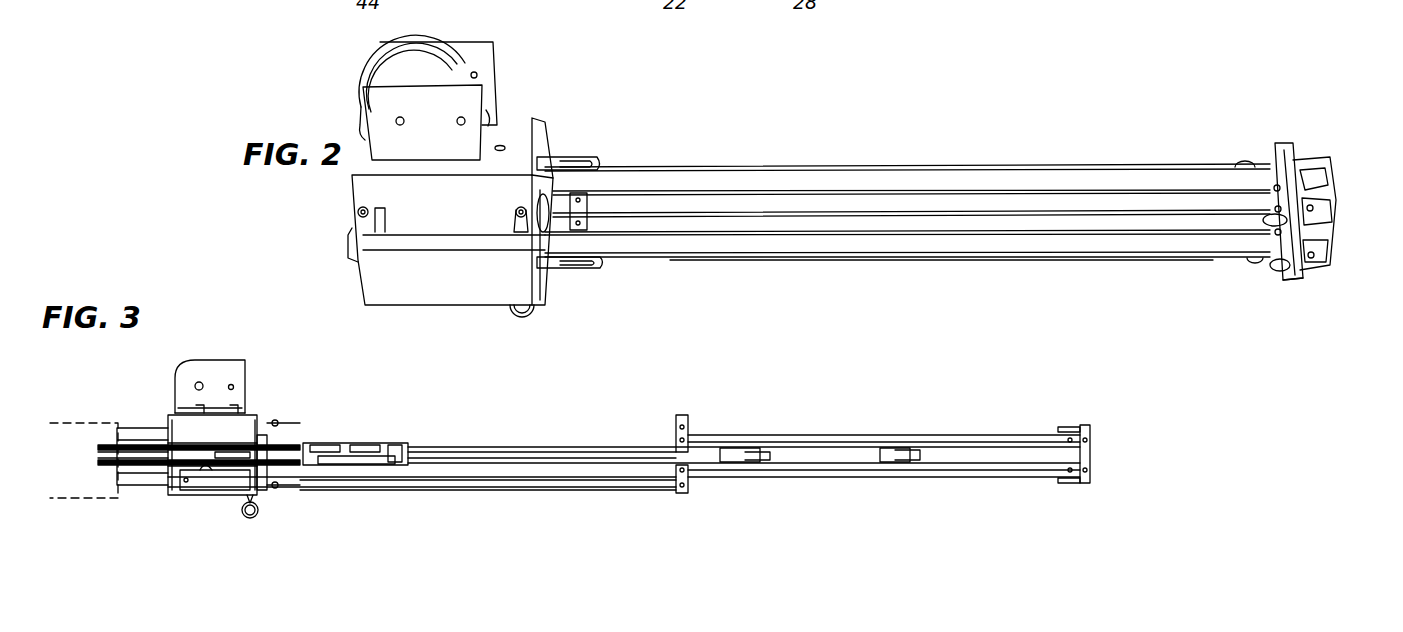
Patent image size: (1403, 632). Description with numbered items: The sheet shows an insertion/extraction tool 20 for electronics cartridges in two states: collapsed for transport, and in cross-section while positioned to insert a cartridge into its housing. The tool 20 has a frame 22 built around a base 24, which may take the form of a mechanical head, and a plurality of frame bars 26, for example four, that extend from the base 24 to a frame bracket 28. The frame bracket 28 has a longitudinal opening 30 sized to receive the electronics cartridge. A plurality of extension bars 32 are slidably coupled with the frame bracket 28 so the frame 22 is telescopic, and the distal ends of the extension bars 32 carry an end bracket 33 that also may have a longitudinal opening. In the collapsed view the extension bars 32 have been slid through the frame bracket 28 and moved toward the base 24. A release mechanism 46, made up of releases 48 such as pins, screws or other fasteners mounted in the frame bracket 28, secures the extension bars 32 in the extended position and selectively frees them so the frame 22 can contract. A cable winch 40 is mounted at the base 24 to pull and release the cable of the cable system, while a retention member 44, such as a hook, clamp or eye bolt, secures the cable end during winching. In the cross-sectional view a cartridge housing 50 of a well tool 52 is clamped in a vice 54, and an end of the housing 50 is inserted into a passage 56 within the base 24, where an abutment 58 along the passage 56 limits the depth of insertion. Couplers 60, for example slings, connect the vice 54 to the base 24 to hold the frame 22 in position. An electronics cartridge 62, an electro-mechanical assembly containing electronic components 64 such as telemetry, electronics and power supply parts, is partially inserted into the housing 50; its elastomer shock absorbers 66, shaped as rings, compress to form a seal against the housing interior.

In FIG. 2, the tool 20 is at (1128, 148).
In FIG. 3, the tool 20 is at (827, 413).
In FIG. 2, the frame 22 is at (658, 283).
In FIG. 3, the frame 22 is at (662, 495).
In FIG. 2, the base 24 is at (357, 297).
In FIG. 3, the base 24 is at (220, 497).
In FIG. 2, the frame bars 26 is at (858, 243).
In FIG. 3, the frame bars 26 is at (533, 488).
In FIG. 2, the frame bracket 28 is at (1283, 150).
In FIG. 3, the frame bracket 28 is at (683, 495).
In FIG. 3, the longitudinal opening 30 is at (652, 448).
In FIG. 2, the extension bars 32 is at (755, 222).
In FIG. 3, the extension bars 32 is at (943, 445).
In FIG. 2, the end bracket 33 is at (1330, 198).
In FIG. 3, the end bracket 33 is at (1093, 452).
In FIG. 2, the cable winch 40 is at (447, 27).
In FIG. 3, the cable winch 40 is at (215, 358).
In FIG. 2, the retention member 44 is at (522, 317).
In FIG. 3, the retention member 44 is at (262, 512).
In FIG. 2, the release mechanism 46 is at (1272, 275).
In FIG. 2, the releases 48 is at (1270, 215).
In FIG. 3, the cartridge housing 50 is at (128, 443).
In FIG. 3, the well tool 52 is at (98, 438).
In FIG. 3, the vice 54 is at (85, 500).
In FIG. 2, the passage 56 is at (543, 213).
In FIG. 3, the passage 56 is at (210, 472).
In FIG. 3, the abutment 58 is at (233, 443).
In FIG. 3, the couplers 60 is at (157, 420).
In FIG. 3, the electronics cartridge 62 is at (437, 442).
In FIG. 3, the electronic components 64 is at (387, 447).
In FIG. 3, the shock absorbers 66 is at (398, 465).